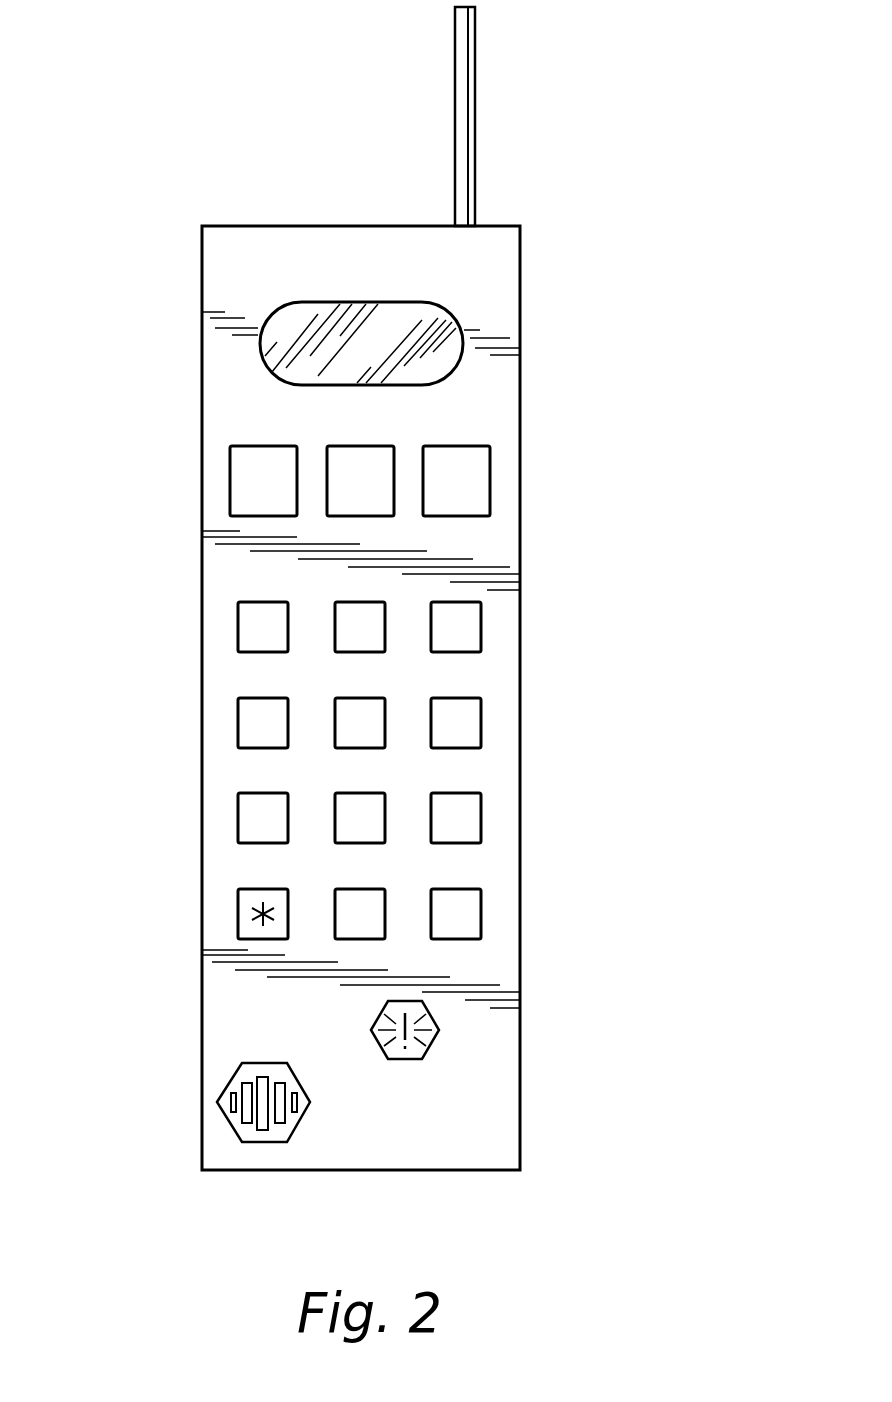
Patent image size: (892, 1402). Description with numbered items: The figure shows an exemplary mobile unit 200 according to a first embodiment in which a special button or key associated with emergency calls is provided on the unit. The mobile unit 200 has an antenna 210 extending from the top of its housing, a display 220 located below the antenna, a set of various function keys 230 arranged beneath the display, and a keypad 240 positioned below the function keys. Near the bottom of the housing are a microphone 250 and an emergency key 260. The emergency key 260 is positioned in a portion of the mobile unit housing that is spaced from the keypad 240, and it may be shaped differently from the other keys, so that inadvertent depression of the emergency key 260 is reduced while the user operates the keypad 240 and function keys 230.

The mobile unit 200 is at (590, 371).
The antenna 210 is at (476, 61).
The display 220 is at (362, 302).
The function keys 230 is at (304, 438).
The keypad 240 is at (200, 773).
The microphone 250 is at (263, 1143).
The emergency key 260 is at (403, 1060).